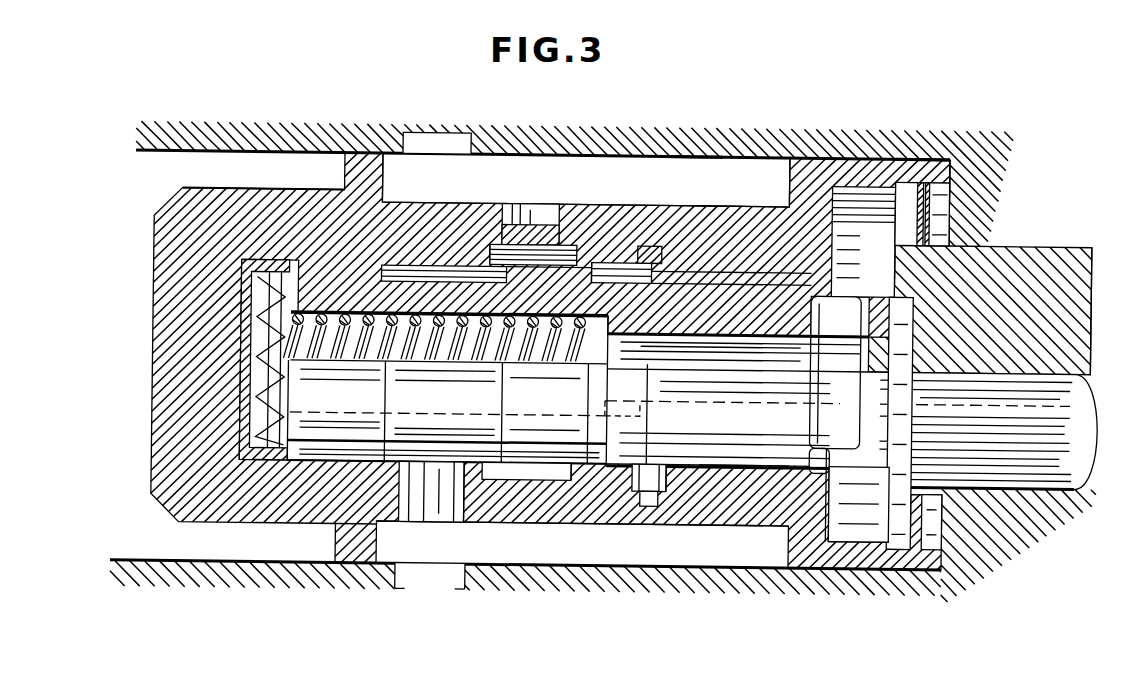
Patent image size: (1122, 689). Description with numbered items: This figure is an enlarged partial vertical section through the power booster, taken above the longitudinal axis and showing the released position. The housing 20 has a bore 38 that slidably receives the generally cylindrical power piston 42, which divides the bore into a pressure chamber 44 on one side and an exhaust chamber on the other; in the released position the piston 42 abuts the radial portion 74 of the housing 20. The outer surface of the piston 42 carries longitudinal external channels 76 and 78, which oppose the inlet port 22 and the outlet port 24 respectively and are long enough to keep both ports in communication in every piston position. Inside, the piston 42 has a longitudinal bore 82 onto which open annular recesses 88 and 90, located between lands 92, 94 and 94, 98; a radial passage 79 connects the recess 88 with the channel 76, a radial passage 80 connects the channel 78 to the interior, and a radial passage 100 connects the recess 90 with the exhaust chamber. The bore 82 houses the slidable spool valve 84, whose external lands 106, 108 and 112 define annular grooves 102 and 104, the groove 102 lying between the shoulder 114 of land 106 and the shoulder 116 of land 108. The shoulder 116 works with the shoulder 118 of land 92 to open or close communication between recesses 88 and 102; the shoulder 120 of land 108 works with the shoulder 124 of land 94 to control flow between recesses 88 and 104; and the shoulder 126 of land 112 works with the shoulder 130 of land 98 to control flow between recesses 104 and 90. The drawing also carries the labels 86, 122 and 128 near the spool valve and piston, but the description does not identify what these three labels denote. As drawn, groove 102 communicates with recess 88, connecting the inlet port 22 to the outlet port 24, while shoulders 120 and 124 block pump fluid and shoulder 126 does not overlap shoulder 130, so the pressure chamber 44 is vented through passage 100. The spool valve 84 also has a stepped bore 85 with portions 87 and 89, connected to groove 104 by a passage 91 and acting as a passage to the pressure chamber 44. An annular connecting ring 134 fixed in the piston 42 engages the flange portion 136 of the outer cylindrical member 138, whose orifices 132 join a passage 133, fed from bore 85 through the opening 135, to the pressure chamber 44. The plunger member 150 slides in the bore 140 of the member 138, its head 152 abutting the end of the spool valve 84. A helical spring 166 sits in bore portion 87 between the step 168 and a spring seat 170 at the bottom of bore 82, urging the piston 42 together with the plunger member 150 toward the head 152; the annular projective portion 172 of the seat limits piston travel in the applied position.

The housing 20 is at (683, 155).
The inlet port 22 is at (440, 147).
The outlet port 24 is at (440, 582).
The bore 38 is at (543, 158).
The power piston 42 is at (149, 246).
The pressure chamber 44 is at (940, 518).
The radial portion 74 is at (953, 208).
The external channel 76 is at (600, 200).
The external channel 78 is at (582, 568).
The radial passage 79 is at (531, 215).
The radial passage 80 is at (450, 495).
The internal longitudinal bore 82 is at (726, 268).
The spool valve 84 is at (358, 262).
The stepped bore 85 is at (706, 356).
The sensor block 86 is at (505, 256).
The bore portion 87 is at (450, 342).
The annular recess 88 is at (535, 478).
The bore portion 89 is at (768, 350).
The annular recess 90 is at (668, 482).
The passage 91 is at (650, 345).
The land 92 is at (482, 470).
The land 94 is at (590, 468).
The land 98 is at (732, 482).
The radial passage 100 is at (651, 505).
The annular groove 102 is at (382, 478).
The annular groove 104 is at (640, 420).
The land 106 is at (378, 395).
The land 108 is at (578, 380).
The land 112 is at (740, 430).
The shoulder 114 is at (393, 268).
The shoulder 116 is at (566, 252).
The shoulder 118 is at (490, 252).
The shoulder 120 is at (640, 258).
The spacer edge 122 is at (598, 262).
The shoulder 124 is at (542, 275).
The shoulder 126 is at (715, 205).
The bearing plate 128 is at (665, 262).
The shoulder 130 is at (665, 272).
The orifices 132 is at (932, 206).
The passage 133 is at (843, 235).
The annular connecting ring 134 is at (935, 165).
The opening 135 is at (840, 297).
The flange portion 136 is at (912, 200).
The outer cylindrical member 138 is at (997, 345).
The bore 140 is at (1030, 340).
The plunger member 150 is at (1040, 365).
The head 152 is at (898, 302).
The helical spring 166 is at (310, 292).
The step 168 is at (618, 275).
The spring seat 170 is at (238, 405).
The annular projective portion 172 is at (258, 277).